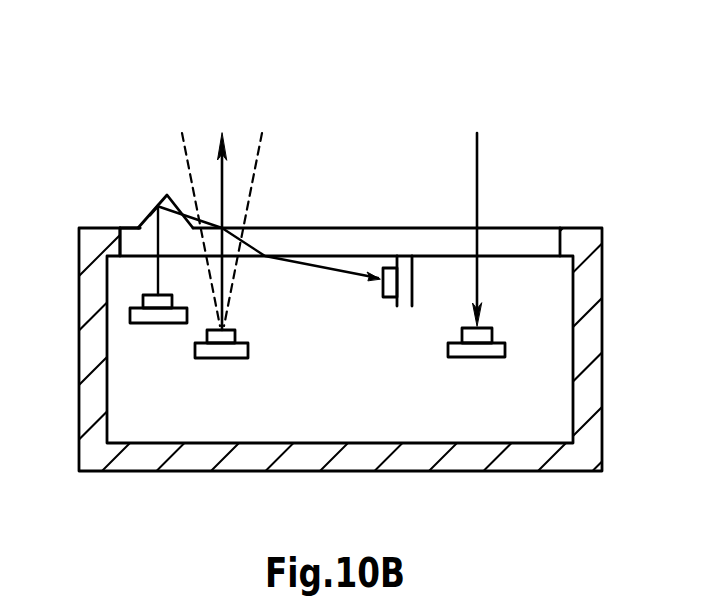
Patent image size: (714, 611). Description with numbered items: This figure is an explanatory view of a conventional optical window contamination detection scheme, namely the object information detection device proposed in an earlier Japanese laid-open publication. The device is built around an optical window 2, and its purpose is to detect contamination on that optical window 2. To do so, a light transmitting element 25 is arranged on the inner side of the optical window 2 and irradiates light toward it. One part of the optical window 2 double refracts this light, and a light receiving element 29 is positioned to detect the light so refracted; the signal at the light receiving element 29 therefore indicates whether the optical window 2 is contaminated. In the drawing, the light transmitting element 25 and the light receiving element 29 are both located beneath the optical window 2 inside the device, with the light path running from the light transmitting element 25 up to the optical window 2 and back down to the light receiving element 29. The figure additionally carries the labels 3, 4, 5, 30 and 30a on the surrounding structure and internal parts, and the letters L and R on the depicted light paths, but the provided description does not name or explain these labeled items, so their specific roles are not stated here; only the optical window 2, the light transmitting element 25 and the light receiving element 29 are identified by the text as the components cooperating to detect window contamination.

The optical window 2 is at (373, 238).
The housing 3 is at (93, 390).
The light receiving element 4 is at (220, 359).
The light receiving element 5 is at (478, 358).
The light transmitting element 25 is at (162, 324).
The light receiving element 29 is at (404, 303).
The prism 30 is at (163, 208).
The prism inclined face 30a is at (149, 215).
The light L is at (222, 183).
The reflected light ray R is at (322, 270).